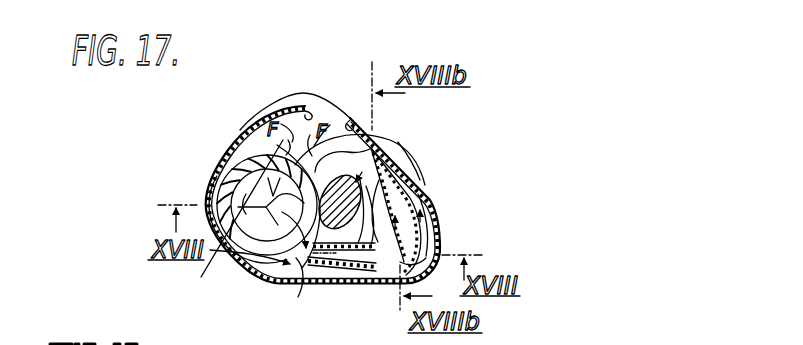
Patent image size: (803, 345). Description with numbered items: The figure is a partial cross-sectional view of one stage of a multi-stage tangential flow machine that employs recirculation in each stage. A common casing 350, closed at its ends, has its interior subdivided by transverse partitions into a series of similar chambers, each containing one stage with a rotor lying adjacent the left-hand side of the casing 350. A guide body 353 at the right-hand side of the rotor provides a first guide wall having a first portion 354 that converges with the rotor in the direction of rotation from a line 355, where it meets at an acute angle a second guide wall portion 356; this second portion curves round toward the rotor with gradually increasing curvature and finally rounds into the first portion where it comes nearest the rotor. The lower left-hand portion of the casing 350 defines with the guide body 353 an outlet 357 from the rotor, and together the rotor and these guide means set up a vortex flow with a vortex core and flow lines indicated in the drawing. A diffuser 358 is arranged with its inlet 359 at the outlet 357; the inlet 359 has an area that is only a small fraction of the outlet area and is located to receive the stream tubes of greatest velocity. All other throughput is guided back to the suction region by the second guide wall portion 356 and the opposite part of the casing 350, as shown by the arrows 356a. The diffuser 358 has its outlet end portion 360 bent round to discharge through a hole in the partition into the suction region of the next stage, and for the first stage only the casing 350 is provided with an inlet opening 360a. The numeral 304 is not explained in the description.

The common casing 350 is at (227, 149).
The inlet opening 360a is at (306, 104).
The rotor 304 is at (225, 245).
The first guide wall portion 354 is at (306, 168).
The guide body 353 is at (408, 150).
The arrows 356a is at (350, 190).
The second guide wall portion 356 is at (374, 203).
The outlet end portion 360 is at (418, 218).
The line 355 is at (420, 243).
The diffuser 358 is at (385, 256).
The inlet 359 is at (330, 248).
The outlet 357 is at (290, 279).